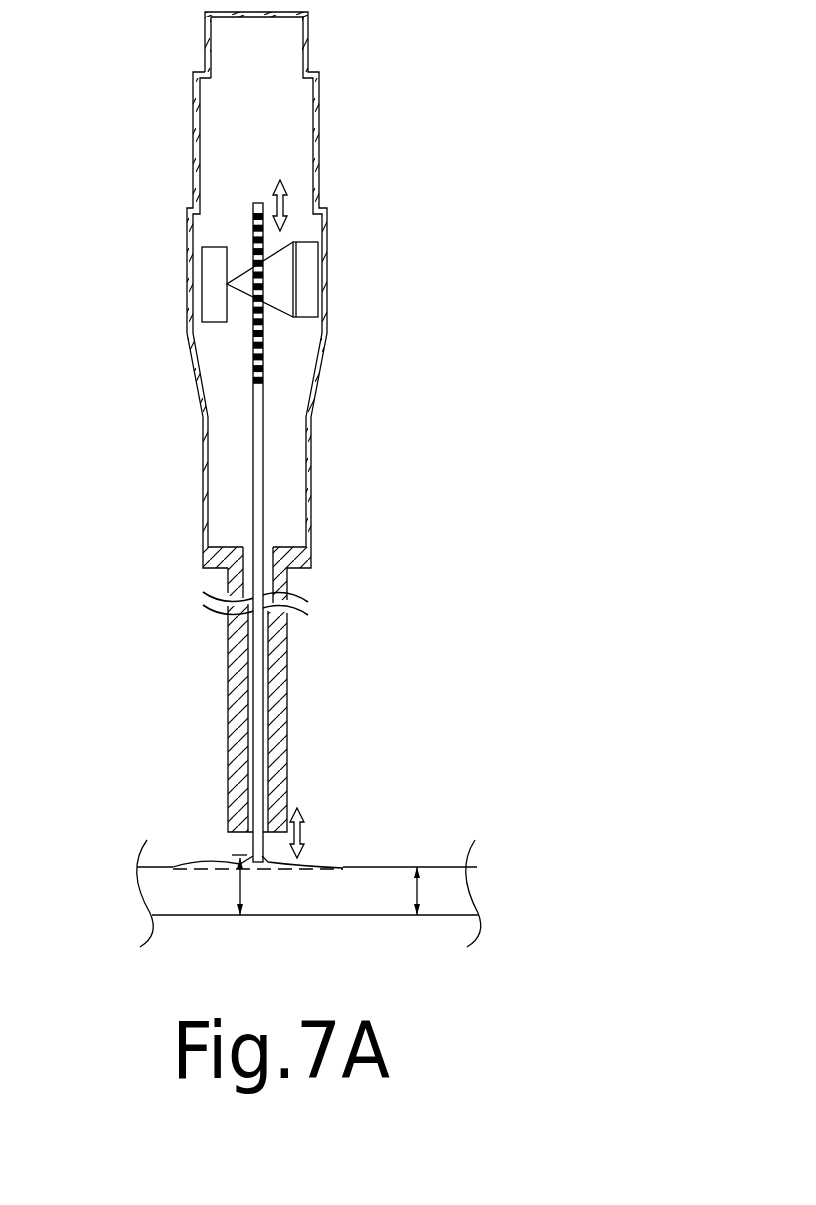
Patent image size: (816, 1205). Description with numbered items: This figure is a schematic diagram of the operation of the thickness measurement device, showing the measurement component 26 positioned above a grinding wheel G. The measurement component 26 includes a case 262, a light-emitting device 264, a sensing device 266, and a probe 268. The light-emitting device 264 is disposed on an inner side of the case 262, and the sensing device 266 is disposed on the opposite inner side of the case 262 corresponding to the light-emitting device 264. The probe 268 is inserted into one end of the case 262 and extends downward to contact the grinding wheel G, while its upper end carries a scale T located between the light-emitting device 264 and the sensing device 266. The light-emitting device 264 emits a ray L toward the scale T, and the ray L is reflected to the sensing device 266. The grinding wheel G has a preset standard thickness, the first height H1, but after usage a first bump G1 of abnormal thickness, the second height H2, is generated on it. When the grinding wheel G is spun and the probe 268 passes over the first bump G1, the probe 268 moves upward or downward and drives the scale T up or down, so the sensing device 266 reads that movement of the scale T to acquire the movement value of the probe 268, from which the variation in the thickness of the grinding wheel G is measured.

The measurement component 26 is at (270, 290).
The case 262 is at (193, 120).
The light-emitting device 264 is at (202, 278).
The sensing device 266 is at (318, 267).
The probe 268 is at (252, 473).
The scale T is at (240, 207).
The light path L is at (280, 312).
The grinding wheel G is at (392, 867).
The first bump G1 is at (232, 863).
The first height H1 is at (415, 888).
The second height H2 is at (242, 880).